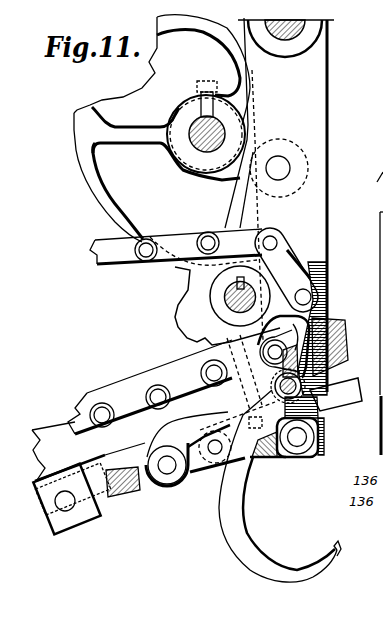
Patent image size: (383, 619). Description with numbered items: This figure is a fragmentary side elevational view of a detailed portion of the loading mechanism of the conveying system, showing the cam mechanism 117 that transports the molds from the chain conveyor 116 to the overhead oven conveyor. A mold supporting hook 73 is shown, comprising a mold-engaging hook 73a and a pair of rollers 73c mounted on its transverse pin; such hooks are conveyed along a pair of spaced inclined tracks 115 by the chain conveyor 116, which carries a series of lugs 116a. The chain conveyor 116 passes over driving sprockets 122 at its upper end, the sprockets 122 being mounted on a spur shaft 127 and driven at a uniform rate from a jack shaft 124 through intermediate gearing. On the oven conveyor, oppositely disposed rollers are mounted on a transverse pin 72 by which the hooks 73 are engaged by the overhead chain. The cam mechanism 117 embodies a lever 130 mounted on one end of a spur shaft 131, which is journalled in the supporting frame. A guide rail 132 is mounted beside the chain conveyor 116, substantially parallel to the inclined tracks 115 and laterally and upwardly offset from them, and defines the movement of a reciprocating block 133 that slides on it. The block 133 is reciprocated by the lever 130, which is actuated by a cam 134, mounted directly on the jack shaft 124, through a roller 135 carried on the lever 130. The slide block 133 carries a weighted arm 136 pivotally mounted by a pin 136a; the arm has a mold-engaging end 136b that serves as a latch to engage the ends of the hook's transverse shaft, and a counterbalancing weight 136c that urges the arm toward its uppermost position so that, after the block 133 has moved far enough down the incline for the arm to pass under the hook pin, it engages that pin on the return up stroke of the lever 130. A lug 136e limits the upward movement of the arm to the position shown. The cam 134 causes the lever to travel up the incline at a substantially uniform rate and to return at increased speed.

The transverse pin 72 is at (318, 382).
The hook 73 is at (232, 559).
The mold-engaging hook 73a is at (337, 557).
The rollers 73c is at (323, 432).
The tracks 115 is at (333, 402).
The chain conveyor 116 is at (97, 253).
The lugs 116a is at (235, 396).
The cam mechanism 117 is at (93, 216).
The driving sprockets 122 is at (188, 287).
The jack shaft 124 is at (226, 129).
The spur shaft 127 is at (226, 300).
The lever 130 is at (331, 78).
The spur shaft 131 is at (334, 33).
The guide rail 132 is at (55, 424).
The reciprocating block 133 is at (108, 381).
The cam 134 is at (105, 172).
The roller 135 is at (240, 180).
The weighted arm 136 is at (125, 490).
The pin 136a is at (165, 474).
The mold-engaging end 136b is at (236, 382).
The counterbalancing weight 136c is at (73, 524).
The lug 136e is at (290, 458).